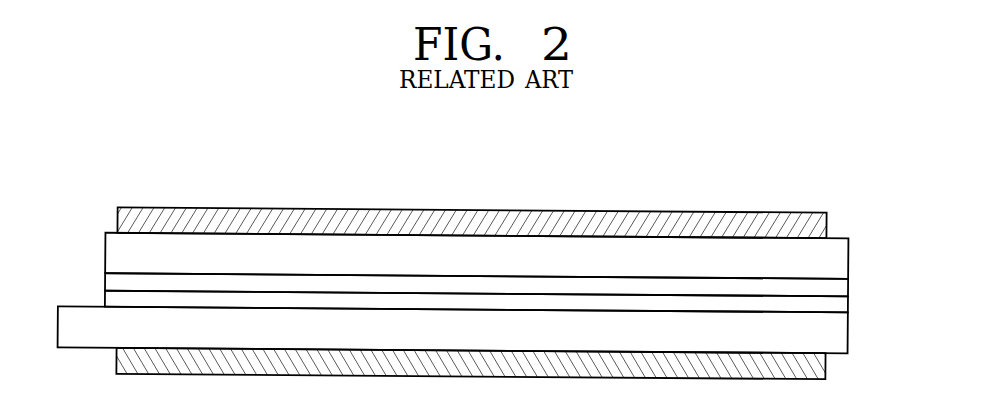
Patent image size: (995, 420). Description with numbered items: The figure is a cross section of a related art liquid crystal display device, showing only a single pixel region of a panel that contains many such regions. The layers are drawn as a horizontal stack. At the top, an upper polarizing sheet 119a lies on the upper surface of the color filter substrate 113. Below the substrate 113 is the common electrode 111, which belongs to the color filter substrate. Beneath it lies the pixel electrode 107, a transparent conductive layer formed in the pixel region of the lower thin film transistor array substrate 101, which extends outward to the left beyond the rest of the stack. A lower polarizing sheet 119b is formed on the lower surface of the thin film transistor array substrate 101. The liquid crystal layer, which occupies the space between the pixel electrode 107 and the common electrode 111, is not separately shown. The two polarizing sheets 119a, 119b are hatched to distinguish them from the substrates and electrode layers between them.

The polarizing sheet 119a is at (827, 225).
The substrate 113 is at (820, 259).
The common electrode 111 is at (820, 286).
The pixel electrode 107 is at (820, 306).
The thin film transistor array substrate 101 is at (820, 332).
The polarizing sheet 119b is at (827, 367).